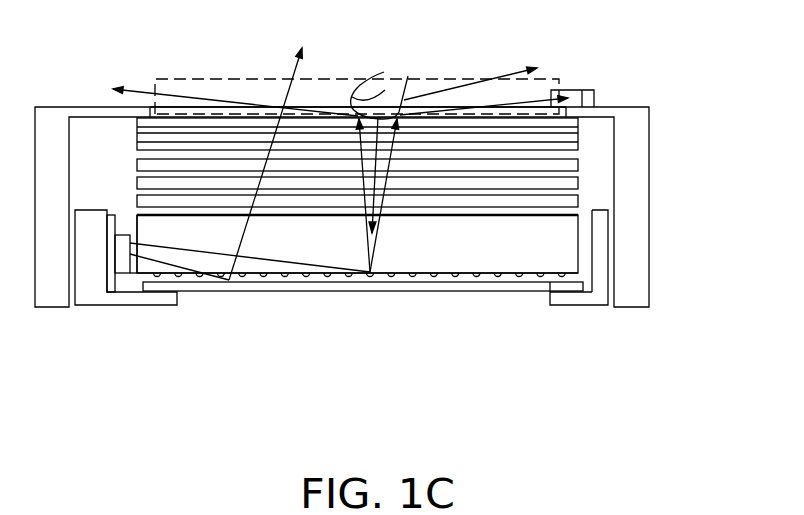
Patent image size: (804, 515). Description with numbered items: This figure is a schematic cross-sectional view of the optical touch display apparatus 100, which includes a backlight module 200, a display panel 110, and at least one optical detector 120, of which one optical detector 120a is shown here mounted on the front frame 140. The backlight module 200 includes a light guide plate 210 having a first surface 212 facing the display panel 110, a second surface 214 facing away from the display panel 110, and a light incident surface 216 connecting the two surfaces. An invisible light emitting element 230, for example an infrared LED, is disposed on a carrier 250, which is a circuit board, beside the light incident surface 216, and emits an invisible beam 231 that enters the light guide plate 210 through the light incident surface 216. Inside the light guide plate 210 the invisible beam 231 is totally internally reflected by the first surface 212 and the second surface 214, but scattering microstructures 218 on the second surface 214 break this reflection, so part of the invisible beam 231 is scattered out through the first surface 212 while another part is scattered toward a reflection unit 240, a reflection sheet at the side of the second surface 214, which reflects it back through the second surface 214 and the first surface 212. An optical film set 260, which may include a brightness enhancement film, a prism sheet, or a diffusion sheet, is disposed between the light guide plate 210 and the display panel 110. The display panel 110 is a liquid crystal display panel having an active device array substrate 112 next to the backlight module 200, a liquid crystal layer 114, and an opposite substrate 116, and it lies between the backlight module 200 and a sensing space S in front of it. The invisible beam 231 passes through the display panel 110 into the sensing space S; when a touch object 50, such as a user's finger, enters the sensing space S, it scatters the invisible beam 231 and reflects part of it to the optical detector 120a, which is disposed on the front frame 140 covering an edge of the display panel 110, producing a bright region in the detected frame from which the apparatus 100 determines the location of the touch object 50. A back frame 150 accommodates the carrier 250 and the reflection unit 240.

The optical touch display apparatus 100 is at (742, 404).
The display panel 110 is at (447, 121).
The active device array substrate 112 is at (577, 143).
The liquid crystal layer 114 is at (577, 133).
The opposite substrate 116 is at (577, 123).
The optical detector 120 is at (391, 63).
The optical detector 120a is at (574, 95).
The front frame 140 is at (50, 115).
The back frame 150 is at (160, 306).
The backlight module 200 is at (401, 240).
The light guide plate 210 is at (429, 313).
The first surface 212 is at (560, 212).
The second surface 214 is at (512, 285).
The light incident surface 216 is at (129, 274).
The scattering microstructures 218 is at (348, 282).
The invisible light emitting element 230 is at (120, 262).
The invisible beam 231 is at (186, 283).
The reflection unit 240 is at (253, 291).
The carrier 250 is at (113, 267).
The optical film set 260 is at (132, 155).
The touch object 50 is at (382, 72).
The sensing space S is at (238, 78).